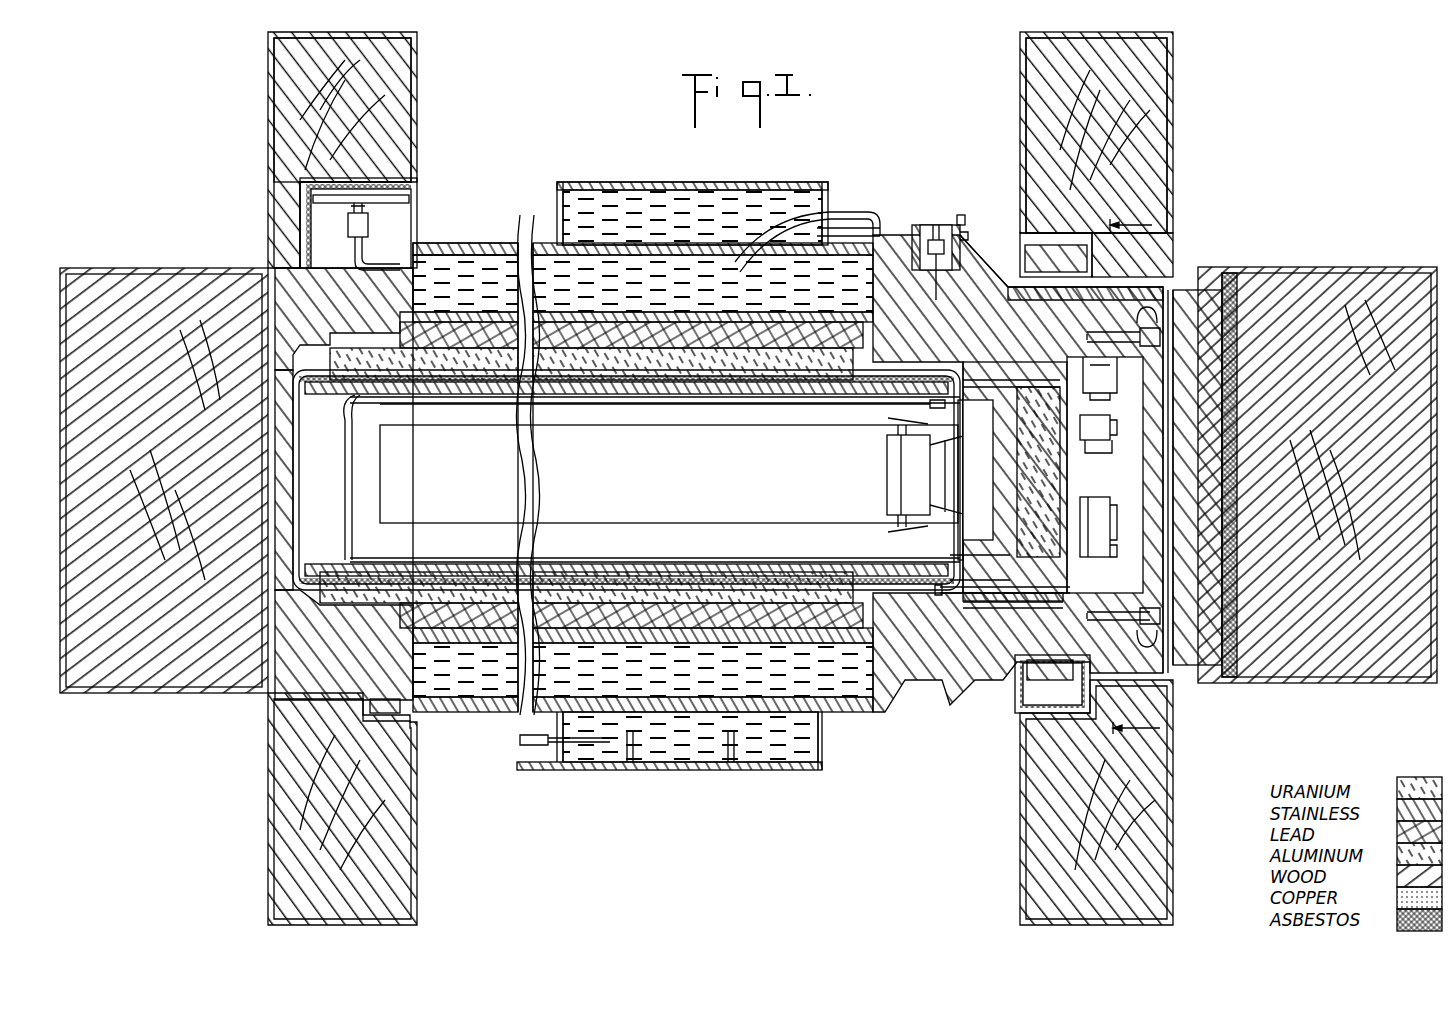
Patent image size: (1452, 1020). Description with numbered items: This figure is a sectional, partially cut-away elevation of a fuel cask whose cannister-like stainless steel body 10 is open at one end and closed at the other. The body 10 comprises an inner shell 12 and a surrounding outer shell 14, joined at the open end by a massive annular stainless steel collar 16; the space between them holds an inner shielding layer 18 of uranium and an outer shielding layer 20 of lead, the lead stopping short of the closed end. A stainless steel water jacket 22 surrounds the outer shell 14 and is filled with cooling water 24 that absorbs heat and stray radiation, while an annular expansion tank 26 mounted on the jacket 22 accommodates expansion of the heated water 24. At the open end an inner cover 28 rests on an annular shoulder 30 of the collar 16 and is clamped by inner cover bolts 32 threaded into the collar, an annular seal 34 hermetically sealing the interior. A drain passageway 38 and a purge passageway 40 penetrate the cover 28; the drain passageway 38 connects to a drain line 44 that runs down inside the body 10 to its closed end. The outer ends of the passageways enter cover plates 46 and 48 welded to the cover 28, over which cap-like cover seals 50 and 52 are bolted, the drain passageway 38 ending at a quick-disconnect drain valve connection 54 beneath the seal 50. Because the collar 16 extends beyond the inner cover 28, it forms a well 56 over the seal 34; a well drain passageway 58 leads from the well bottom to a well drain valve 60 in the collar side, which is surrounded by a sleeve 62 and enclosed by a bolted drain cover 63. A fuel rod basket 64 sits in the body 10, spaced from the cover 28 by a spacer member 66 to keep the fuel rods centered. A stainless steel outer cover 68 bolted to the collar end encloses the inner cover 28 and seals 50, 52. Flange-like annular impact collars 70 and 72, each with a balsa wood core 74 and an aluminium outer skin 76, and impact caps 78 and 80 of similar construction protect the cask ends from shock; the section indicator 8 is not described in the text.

The section line indicator 8 is at (1135, 480).
The stainless steel body 10 is at (476, 233).
The inner shell 12 is at (709, 396).
The outer shell 14 is at (635, 318).
The annular stainless steel collar 16 is at (983, 273).
The inner shielding layer 18 is at (598, 370).
The outer shielding layer 20 is at (786, 330).
The water jacket 22 is at (540, 243).
The cooling water 24 is at (846, 262).
The annular expansion tank 26 is at (632, 185).
The inner cover 28 is at (975, 596).
The annular shoulder 30 is at (945, 590).
The inner cover bolts 32 is at (1008, 598).
The annular seal 34 is at (950, 557).
The drain passageway 38 is at (1028, 380).
The purge passageway 40 is at (1060, 590).
The drain line 44 is at (842, 410).
The cover plate 46 is at (1072, 355).
The cover plate 48 is at (1080, 500).
The cover seal 50 is at (1108, 378).
The cover seal 52 is at (1110, 558).
The drain valve connection 54 is at (1128, 440).
The well 56 is at (1170, 472).
The well drain passageway 58 is at (1012, 302).
The well drain valve 60 is at (936, 225).
The sleeve 62 is at (912, 225).
The drain cover 63 is at (961, 215).
The fuel rod basket 64 is at (420, 512).
The spacer member 66 is at (905, 476).
The outer cover 68 is at (1166, 520).
The impact collar 70 is at (432, 78).
The impact collar 72 is at (1007, 109).
The core 74 is at (417, 130).
The outer skin 76 is at (290, 122).
The impact cap 78 is at (198, 230).
The impact cap 80 is at (1375, 262).